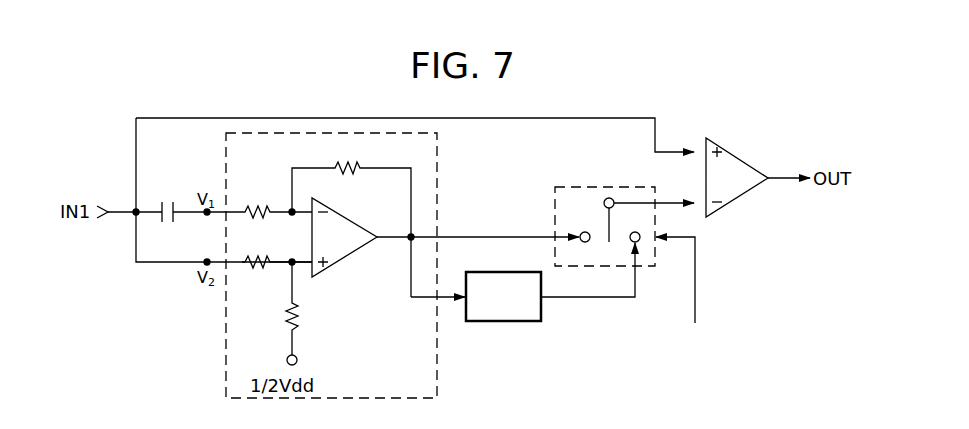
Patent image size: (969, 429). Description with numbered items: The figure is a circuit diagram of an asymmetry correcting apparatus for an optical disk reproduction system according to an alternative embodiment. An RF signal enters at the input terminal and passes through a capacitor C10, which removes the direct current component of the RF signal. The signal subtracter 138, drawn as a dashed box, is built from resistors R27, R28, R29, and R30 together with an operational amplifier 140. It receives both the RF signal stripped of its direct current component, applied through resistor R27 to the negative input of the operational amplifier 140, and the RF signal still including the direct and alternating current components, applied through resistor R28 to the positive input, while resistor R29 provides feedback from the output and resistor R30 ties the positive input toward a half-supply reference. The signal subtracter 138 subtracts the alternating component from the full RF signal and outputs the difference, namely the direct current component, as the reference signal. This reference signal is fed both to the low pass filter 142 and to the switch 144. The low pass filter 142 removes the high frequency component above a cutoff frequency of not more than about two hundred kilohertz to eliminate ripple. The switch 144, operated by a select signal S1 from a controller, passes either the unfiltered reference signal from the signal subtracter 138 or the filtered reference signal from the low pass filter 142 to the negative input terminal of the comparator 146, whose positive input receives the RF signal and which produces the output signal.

The signal subtracter 138 is at (226, 345).
The operational amplifier 140 is at (343, 258).
The low pass filter 142 is at (505, 322).
The switch 144 is at (592, 187).
The comparator 146 is at (737, 156).
The capacitor C10 is at (192, 202).
The resistor R27 is at (275, 200).
The resistor R28 is at (275, 250).
The resistor R29 is at (351, 219).
The resistor R30 is at (310, 313).
The select signal S1 is at (681, 297).